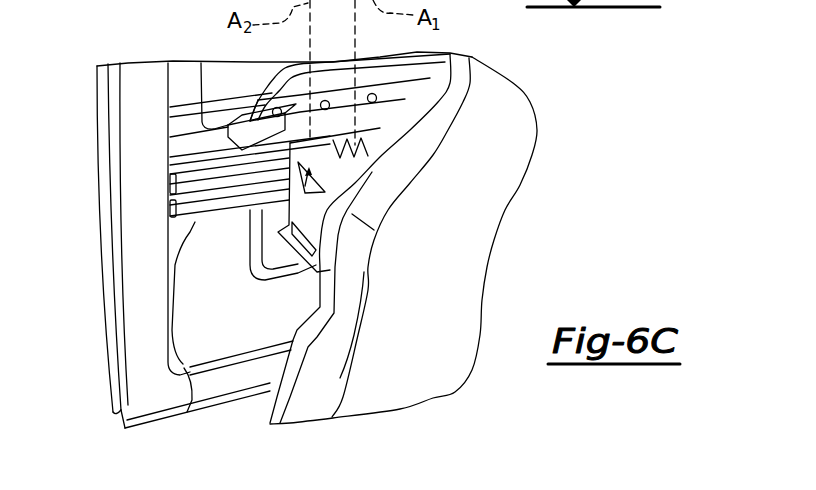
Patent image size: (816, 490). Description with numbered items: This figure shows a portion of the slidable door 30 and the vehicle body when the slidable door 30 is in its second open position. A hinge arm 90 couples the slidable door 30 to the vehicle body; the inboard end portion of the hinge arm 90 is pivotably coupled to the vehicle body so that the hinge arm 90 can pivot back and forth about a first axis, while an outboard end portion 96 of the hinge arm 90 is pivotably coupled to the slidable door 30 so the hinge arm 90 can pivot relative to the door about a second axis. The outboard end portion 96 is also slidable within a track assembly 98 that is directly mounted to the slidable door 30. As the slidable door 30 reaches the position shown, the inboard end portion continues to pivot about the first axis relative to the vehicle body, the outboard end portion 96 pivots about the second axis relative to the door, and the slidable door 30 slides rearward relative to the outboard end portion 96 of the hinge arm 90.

The slidable door 30 is at (583, 228).
The track assembly 98 is at (188, 160).
The hinge arm 90 is at (290, 214).
The outboard end portion 96 is at (278, 243).